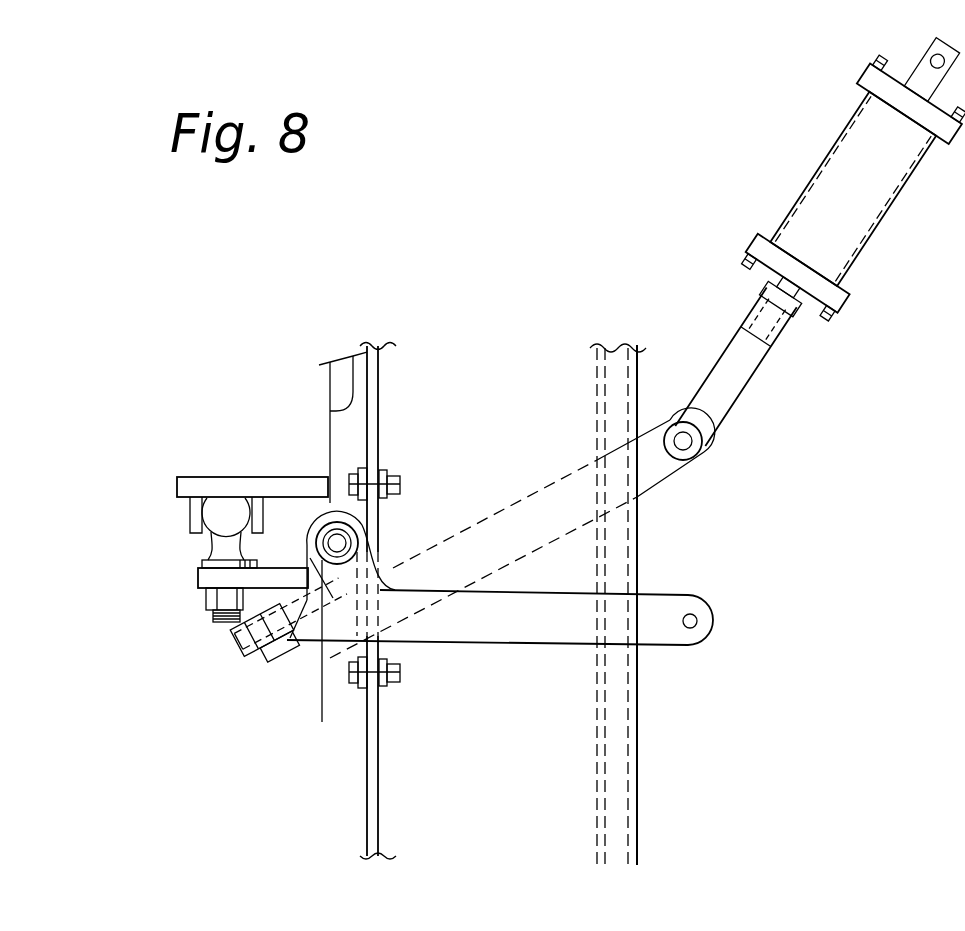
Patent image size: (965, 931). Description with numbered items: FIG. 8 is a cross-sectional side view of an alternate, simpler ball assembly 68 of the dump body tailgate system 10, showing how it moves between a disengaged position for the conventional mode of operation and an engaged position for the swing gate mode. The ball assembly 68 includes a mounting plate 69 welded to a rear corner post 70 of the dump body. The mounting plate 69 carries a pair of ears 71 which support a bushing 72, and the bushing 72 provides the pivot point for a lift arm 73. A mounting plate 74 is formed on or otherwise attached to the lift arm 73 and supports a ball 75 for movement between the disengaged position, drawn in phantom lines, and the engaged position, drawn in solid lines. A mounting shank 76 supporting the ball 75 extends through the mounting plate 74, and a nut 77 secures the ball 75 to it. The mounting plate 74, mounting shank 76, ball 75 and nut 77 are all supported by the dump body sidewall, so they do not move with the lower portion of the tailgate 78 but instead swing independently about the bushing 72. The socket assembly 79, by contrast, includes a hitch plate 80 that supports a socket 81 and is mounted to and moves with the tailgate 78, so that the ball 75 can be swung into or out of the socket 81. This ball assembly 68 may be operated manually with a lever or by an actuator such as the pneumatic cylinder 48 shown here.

The gate actuating assembly 10 is at (475, 298).
The hydraulic cylinder 48 is at (712, 367).
The ball assembly 68 is at (310, 664).
The mounting plate 69 is at (355, 690).
The rear corner post 70 is at (380, 417).
The ears 71 is at (330, 500).
The bushing 72 is at (322, 537).
The lift arm 73 is at (537, 483).
The mounting plate 74 is at (203, 573).
The ball 75 is at (205, 566).
The mounting shank 76 is at (232, 626).
The nut 77 is at (208, 599).
The tailgate 78 is at (352, 357).
The socket assembly 79 is at (222, 474).
The hitch plate 80 is at (193, 478).
The socket 81 is at (191, 523).